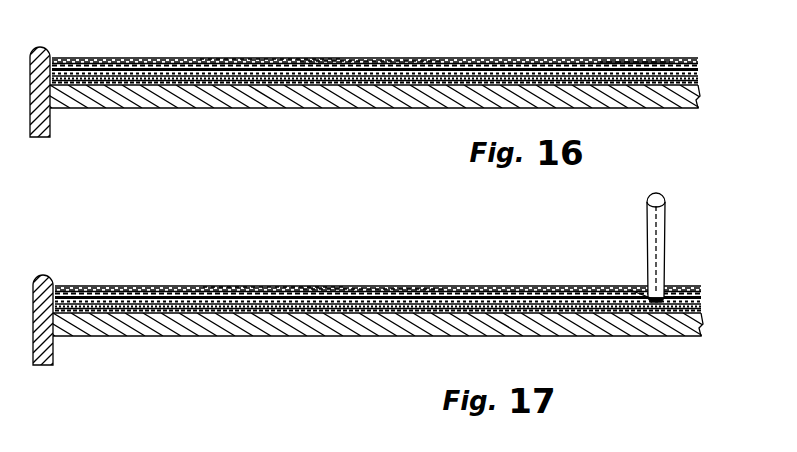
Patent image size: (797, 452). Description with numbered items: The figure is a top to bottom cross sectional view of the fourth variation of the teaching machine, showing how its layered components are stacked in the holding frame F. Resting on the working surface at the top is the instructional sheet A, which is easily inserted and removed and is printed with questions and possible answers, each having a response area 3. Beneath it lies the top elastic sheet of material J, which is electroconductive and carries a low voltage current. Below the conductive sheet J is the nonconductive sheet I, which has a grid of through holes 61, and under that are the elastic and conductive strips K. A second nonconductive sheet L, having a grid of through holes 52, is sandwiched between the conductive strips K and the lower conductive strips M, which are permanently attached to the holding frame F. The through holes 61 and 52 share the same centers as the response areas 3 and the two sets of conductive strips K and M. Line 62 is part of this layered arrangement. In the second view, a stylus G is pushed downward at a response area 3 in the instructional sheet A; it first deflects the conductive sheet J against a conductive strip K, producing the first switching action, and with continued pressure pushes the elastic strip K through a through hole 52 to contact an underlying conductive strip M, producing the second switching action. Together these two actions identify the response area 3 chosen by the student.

In FIG. 16, the holding frame F is at (43, 47).
In FIG. 17, the holding frame F is at (46, 275).
In FIG. 16, the instructional sheet A is at (75, 58).
In FIG. 17, the instructional sheet A is at (78, 285).
In FIG. 16, the elastic and conductive sheet J is at (143, 58).
In FIG. 17, the elastic and conductive sheet J is at (147, 285).
In FIG. 16, the through holes 61 is at (282, 60).
In FIG. 17, the through holes 61 is at (285, 288).
In FIG. 16, the second line 62 is at (357, 62).
In FIG. 17, the second line 62 is at (360, 290).
In FIG. 16, the nonconductive sheet I is at (440, 62).
In FIG. 17, the nonconductive sheet I is at (443, 290).
In FIG. 16, the elastic and conductive strips K is at (507, 63).
In FIG. 17, the elastic and conductive strips K is at (510, 291).
In FIG. 16, the response area 3 is at (637, 63).
In FIG. 17, the response area 3 is at (640, 290).
In FIG. 16, the nonconductive sheet L is at (308, 82).
In FIG. 17, the nonconductive sheet L is at (311, 310).
In FIG. 16, the conductive strips M is at (393, 87).
In FIG. 17, the conductive strips M is at (396, 315).
In FIG. 16, the through holes 52 is at (197, 85).
In FIG. 17, the through holes 52 is at (200, 313).
In FIG. 17, the stylus G is at (648, 213).